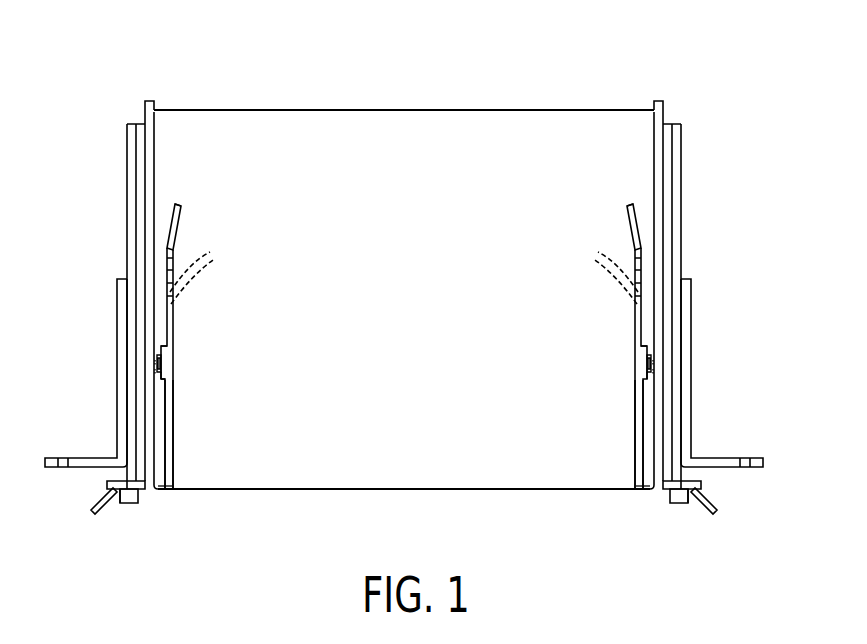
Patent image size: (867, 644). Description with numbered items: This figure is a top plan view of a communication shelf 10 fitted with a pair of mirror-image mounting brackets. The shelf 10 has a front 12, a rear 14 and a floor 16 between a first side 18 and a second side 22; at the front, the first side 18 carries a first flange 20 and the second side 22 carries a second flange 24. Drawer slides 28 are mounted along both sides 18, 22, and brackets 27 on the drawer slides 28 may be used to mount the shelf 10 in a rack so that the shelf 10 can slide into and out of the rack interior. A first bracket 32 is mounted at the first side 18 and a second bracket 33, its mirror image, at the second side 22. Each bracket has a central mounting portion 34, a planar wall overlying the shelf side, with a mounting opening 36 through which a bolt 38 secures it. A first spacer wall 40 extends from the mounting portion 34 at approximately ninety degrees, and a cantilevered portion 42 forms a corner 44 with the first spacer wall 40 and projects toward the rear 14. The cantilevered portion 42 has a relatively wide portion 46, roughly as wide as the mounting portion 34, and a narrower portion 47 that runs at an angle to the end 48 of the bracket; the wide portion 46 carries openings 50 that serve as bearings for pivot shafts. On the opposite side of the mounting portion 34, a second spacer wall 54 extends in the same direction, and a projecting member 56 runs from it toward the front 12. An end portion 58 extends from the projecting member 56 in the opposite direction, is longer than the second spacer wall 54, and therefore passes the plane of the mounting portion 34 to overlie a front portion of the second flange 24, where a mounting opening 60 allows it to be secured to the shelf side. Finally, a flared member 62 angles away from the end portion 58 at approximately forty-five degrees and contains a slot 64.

The shelf 10 is at (575, 70).
The front 12 is at (402, 490).
The rear 14 is at (355, 110).
The floor 16 is at (395, 319).
The first side 18 is at (653, 159).
The first flange 20 is at (700, 488).
The second side 22 is at (156, 154).
The second flange 24 is at (113, 490).
The brackets 27 is at (117, 298).
The drawer slides 28 is at (131, 203).
The first bracket 32 is at (633, 493).
The second bracket 33 is at (175, 495).
The mounting portion 34 is at (164, 362).
The mounting opening 36 is at (165, 378).
The bolt 38 is at (165, 368).
The first spacer wall 40 is at (163, 358).
The cantilevered portion 42 is at (175, 322).
The corner 44 is at (170, 352).
The relatively wide portion 46 is at (170, 332).
The narrower portion 47 is at (178, 231).
The end 48 is at (178, 201).
The openings 50 is at (404, 270).
The second spacer wall 54 is at (160, 377).
The projecting member 56 is at (174, 450).
The end portion 58 is at (162, 496).
The mounting opening 60 is at (152, 503).
The flared member 62 is at (93, 512).
The slot 64 is at (117, 505).